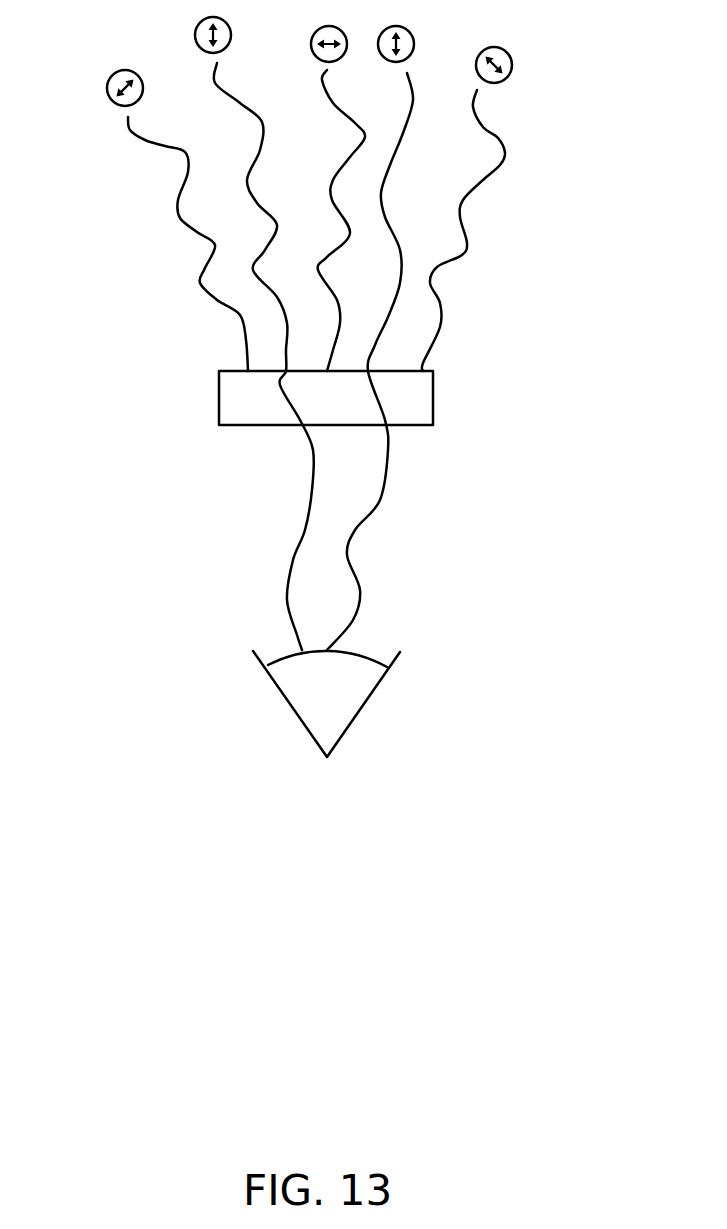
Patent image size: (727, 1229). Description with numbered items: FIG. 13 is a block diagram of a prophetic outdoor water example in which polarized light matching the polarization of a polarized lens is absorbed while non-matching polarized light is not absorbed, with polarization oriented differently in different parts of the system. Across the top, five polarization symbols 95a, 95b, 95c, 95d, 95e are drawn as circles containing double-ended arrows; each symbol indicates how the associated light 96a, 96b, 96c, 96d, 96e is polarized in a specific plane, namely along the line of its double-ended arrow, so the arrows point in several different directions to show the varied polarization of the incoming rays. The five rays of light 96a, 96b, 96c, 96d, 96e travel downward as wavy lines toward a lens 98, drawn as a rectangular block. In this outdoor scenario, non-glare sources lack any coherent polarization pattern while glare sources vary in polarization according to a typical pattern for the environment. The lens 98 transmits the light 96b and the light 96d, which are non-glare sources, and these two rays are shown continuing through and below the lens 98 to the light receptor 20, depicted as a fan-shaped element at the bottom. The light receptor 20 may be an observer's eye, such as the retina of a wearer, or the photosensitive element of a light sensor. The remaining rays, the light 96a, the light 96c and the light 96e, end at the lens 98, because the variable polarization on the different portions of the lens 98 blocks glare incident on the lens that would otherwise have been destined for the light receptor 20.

The polarization symbol 95a is at (107, 83).
The polarization symbol 95b is at (195, 31).
The polarization symbol 95c is at (311, 42).
The polarization symbol 95d is at (414, 44).
The polarization symbol 95e is at (512, 62).
The light 96a is at (130, 133).
The light 96b is at (213, 80).
The light 96c is at (322, 80).
The light 96d is at (381, 193).
The light 96e is at (498, 138).
The lens 98 is at (433, 393).
The light receptor 20 is at (380, 680).